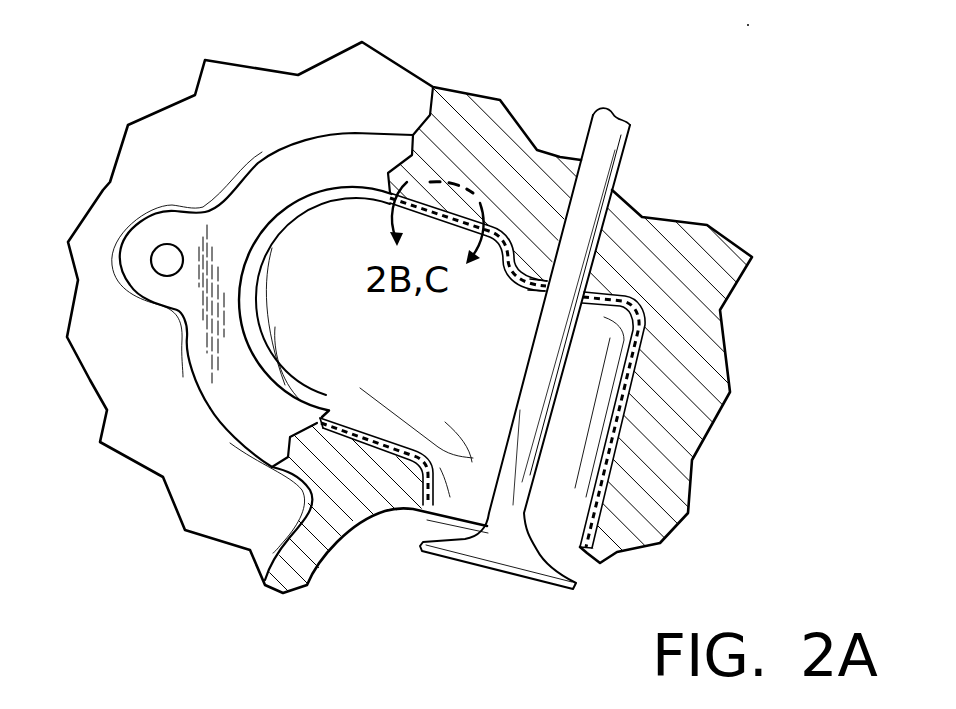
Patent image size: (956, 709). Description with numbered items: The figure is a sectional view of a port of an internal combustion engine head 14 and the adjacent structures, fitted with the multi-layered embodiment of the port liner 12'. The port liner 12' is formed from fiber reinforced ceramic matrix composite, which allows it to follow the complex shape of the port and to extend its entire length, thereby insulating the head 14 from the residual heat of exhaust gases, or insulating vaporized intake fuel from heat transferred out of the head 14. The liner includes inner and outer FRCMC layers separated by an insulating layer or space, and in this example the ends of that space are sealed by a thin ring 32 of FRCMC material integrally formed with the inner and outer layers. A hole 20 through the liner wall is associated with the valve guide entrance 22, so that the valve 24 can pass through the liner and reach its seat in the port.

The head 14 is at (380, 75).
The port liner 12' is at (468, 169).
The valve guide entrance 22 is at (624, 180).
The valve 24 is at (525, 394).
The hole 20 is at (538, 295).
The thin ring 32 is at (323, 420).